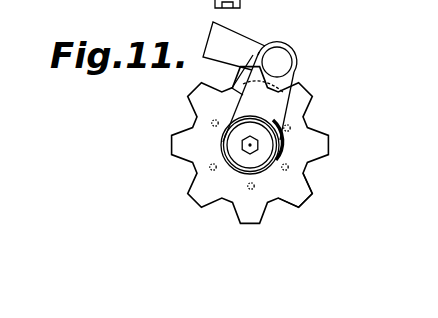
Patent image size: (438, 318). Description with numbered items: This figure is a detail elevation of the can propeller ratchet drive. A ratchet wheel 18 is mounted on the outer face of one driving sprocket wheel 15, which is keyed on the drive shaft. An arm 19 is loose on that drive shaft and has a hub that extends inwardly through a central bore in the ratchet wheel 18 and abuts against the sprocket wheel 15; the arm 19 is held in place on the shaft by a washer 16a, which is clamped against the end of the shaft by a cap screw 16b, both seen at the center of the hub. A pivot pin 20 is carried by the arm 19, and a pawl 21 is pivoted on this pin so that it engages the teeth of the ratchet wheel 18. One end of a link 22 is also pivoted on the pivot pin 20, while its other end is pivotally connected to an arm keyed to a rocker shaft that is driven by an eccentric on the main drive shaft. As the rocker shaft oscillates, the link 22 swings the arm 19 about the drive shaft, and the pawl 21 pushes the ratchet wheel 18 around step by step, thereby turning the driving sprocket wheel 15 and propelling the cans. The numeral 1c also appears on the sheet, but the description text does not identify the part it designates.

The ratchet wheel 15 is at (183, 142).
The hub plate 16a is at (233, 146).
The hub nut 16b is at (247, 150).
The lever lower portion 18 is at (293, 148).
The lever arm 19 is at (283, 95).
The pivot pin 20 is at (279, 62).
The pawl 21 is at (237, 78).
The link bar 22 is at (239, 44).
The frame portion 1c is at (300, 193).